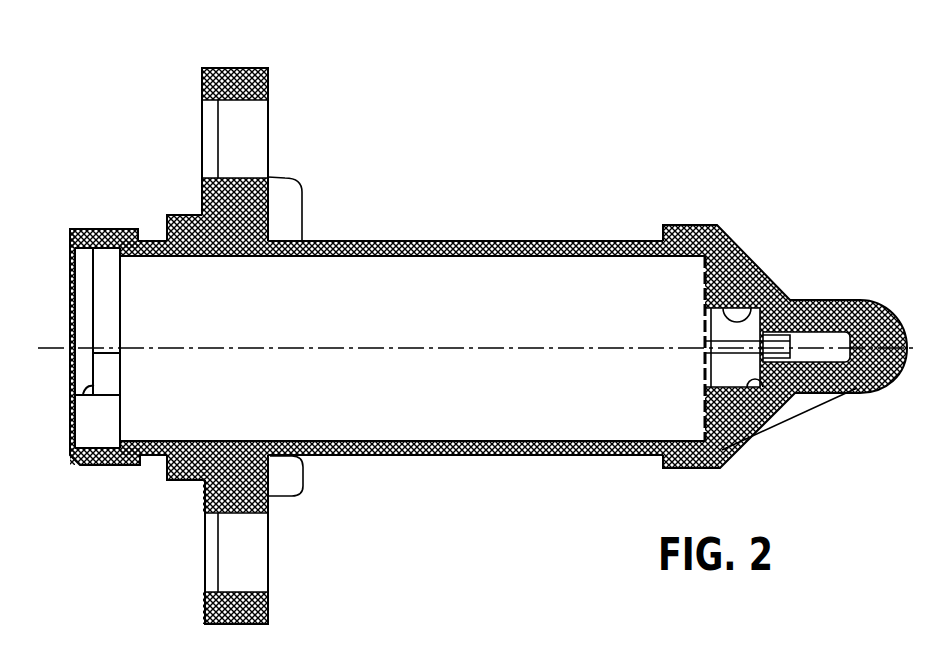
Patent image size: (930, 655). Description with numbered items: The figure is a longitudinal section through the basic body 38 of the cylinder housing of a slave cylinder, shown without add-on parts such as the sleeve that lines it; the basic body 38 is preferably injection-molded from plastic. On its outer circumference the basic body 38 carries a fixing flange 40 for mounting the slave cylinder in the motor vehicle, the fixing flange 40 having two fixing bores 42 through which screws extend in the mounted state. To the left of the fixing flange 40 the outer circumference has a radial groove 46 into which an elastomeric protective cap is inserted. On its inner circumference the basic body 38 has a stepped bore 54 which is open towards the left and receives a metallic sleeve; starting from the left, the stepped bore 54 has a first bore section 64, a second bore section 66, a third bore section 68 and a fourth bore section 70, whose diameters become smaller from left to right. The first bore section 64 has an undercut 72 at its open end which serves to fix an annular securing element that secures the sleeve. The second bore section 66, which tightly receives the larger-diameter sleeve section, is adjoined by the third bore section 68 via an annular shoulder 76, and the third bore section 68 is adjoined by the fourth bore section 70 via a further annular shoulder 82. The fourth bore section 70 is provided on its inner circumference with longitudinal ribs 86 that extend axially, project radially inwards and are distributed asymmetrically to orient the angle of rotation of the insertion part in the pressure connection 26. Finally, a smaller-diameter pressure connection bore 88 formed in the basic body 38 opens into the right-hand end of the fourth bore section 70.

The pressure connection 26 is at (840, 300).
The basic body 38 is at (413, 239).
The fixing flange 40 is at (253, 66).
The fixing bores 42 is at (262, 153).
The radial groove 46 is at (155, 240).
The stepped bore 54 is at (447, 290).
The first bore section 64 is at (105, 284).
The second bore section 66 is at (180, 318).
The third bore section 68 is at (758, 265).
The fourth bore section 70 is at (787, 297).
The undercut 72 is at (103, 315).
The annular shoulder 76 is at (703, 265).
The further annular shoulder 82 is at (768, 420).
The longitudinal ribs 86 is at (758, 355).
The pressure connection bore 88 is at (852, 393).